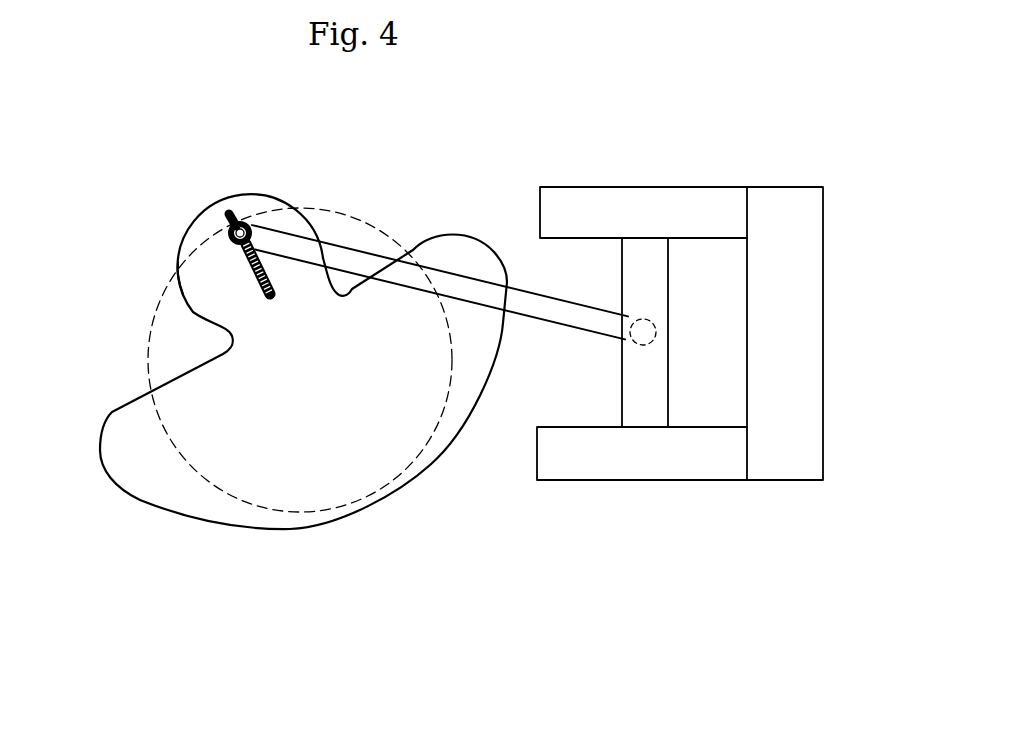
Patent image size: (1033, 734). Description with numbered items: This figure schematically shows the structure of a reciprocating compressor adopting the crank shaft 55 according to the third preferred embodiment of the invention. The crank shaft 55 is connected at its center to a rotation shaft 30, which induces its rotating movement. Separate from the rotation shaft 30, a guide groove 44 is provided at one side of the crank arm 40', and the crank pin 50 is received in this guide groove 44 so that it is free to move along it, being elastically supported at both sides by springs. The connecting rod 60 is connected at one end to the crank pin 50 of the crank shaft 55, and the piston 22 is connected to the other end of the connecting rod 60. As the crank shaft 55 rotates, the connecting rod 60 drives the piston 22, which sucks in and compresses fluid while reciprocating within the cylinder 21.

The cylinder 21 is at (800, 338).
The piston 22 is at (640, 267).
The rotation shaft 30 is at (312, 375).
The crank arm 40' is at (202, 219).
The guide groove 44 is at (180, 267).
The crank pin 50 is at (241, 217).
The crank shaft 55 is at (150, 515).
The connecting rod 60 is at (556, 312).